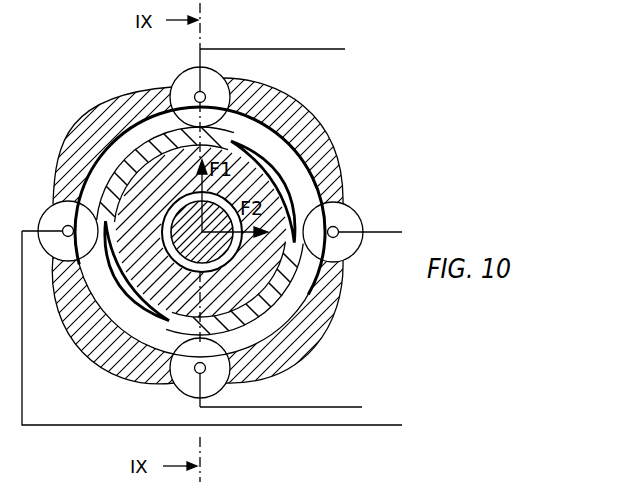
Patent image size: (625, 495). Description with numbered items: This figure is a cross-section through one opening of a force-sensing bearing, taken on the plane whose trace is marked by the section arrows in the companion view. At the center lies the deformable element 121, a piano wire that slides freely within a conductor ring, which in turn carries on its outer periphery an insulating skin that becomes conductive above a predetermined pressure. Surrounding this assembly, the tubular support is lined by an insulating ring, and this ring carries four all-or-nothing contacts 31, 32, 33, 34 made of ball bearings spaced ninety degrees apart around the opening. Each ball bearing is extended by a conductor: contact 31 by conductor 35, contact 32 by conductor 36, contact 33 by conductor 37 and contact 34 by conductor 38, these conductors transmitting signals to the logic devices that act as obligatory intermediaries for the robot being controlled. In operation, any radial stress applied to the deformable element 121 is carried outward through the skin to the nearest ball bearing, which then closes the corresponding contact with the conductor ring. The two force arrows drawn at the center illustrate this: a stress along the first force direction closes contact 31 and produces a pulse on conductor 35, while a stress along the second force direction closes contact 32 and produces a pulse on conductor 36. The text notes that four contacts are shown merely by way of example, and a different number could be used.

The contact 31 is at (229, 99).
The contact 32 is at (336, 258).
The contact 33 is at (226, 378).
The contact 34 is at (83, 242).
The conductor 35 is at (305, 48).
The conductor 36 is at (376, 231).
The conductor 37 is at (333, 407).
The conductor 38 is at (310, 425).
The deformable element 121 is at (220, 247).